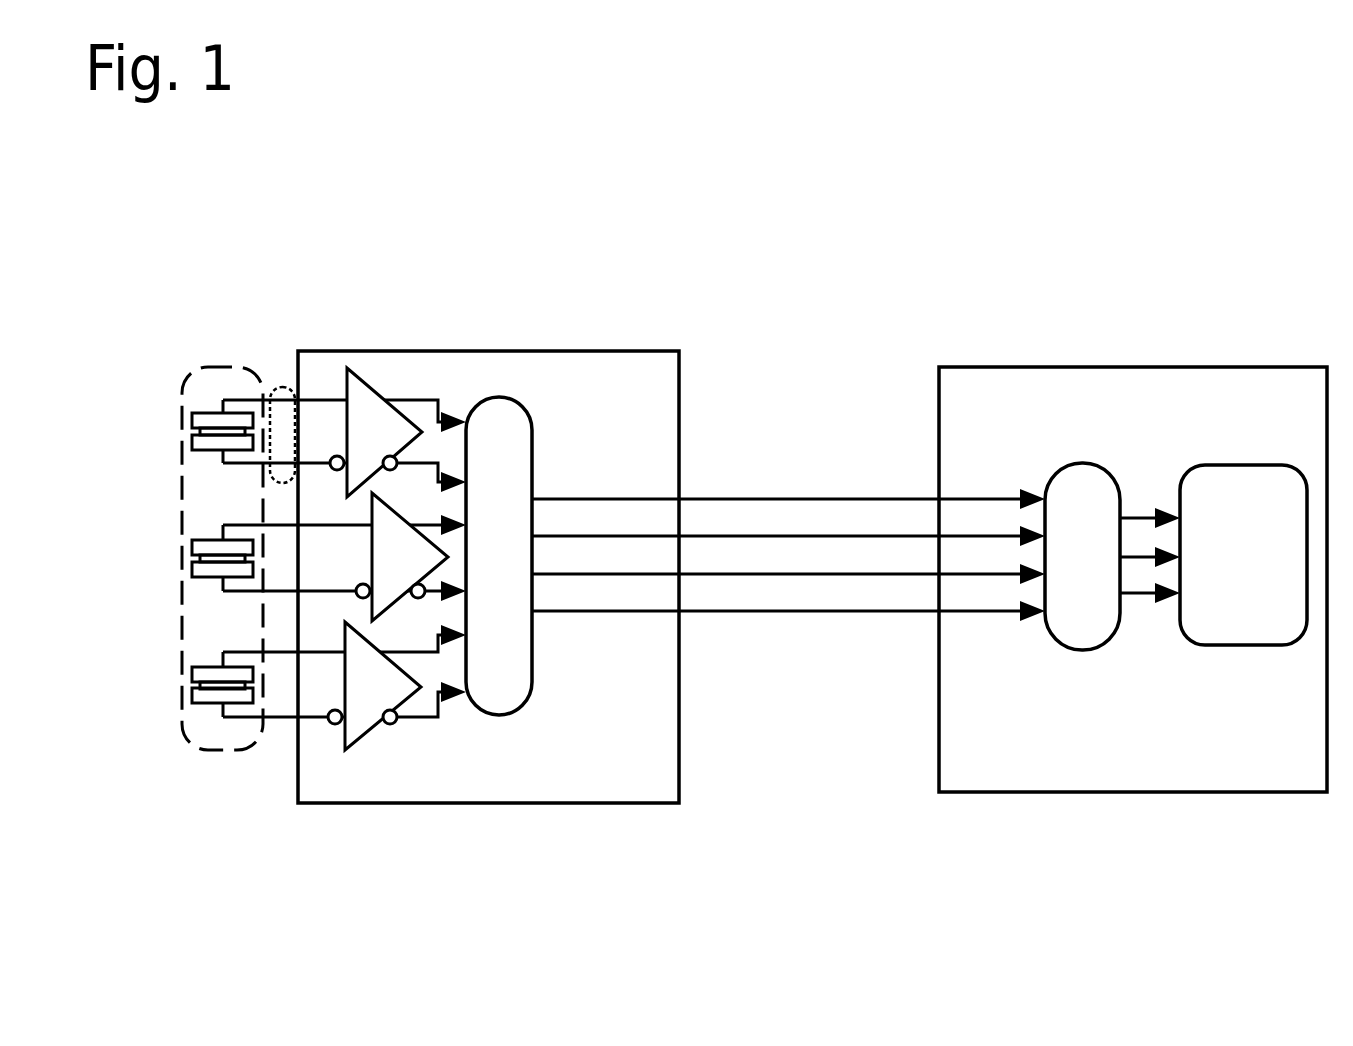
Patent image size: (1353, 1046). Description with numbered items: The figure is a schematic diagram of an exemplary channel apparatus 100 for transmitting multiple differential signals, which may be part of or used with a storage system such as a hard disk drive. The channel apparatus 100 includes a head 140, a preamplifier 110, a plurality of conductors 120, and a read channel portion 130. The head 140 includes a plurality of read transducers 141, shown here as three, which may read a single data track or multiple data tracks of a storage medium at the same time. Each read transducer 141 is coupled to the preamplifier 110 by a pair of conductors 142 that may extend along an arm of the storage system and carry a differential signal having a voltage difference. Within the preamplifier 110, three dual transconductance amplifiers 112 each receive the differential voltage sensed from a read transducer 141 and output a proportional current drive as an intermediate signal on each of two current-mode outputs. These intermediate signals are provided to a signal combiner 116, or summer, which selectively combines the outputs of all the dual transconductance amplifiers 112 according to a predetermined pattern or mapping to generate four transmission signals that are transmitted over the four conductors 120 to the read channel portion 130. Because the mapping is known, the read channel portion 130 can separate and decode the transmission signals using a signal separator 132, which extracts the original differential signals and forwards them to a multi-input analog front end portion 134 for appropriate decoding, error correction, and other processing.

The channel apparatus 100 is at (240, 227).
The preamplifier 110 is at (427, 350).
The dual transconductance amplifiers 112 is at (345, 622).
The signal combiner 116 is at (503, 397).
The conductors 120 is at (774, 420).
The read channel portion 130 is at (995, 364).
The signal separator 132 is at (1080, 463).
The multi-input analog front end portion 134 is at (1217, 465).
The head 140 is at (220, 365).
The read transducers 141 is at (190, 442).
The pair of conductors 142 is at (282, 384).